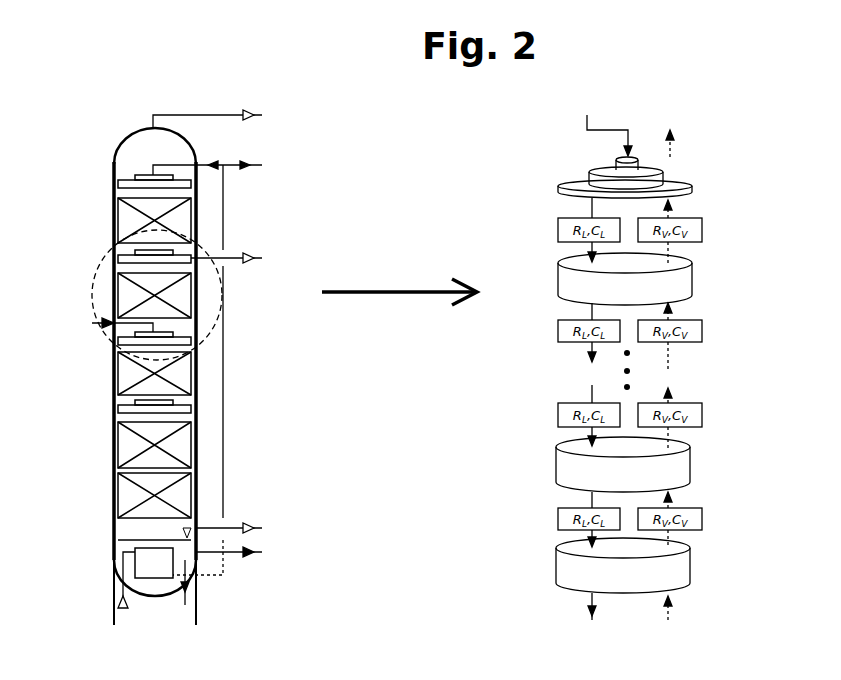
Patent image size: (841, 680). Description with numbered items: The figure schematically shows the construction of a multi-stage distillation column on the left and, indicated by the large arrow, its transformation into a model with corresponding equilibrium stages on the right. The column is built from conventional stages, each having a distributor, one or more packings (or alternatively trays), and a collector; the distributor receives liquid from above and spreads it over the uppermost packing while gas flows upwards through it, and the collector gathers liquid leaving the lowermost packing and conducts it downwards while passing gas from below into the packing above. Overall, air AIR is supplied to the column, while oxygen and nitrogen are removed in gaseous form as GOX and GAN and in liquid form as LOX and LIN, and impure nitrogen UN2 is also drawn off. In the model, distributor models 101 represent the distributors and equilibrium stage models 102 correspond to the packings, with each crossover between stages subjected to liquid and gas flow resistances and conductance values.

The distributor model 101 is at (706, 155).
The equilibrium stage model 102 is at (706, 442).
The gaseous nitrogen GAN is at (238, 120).
The liquid nitrogen LIN is at (238, 366).
The impure nitrogen UN2 is at (257, 259).
The air AIR is at (92, 324).
The gaseous oxygen GOX is at (259, 528).
The liquid oxygen LOX is at (259, 551).